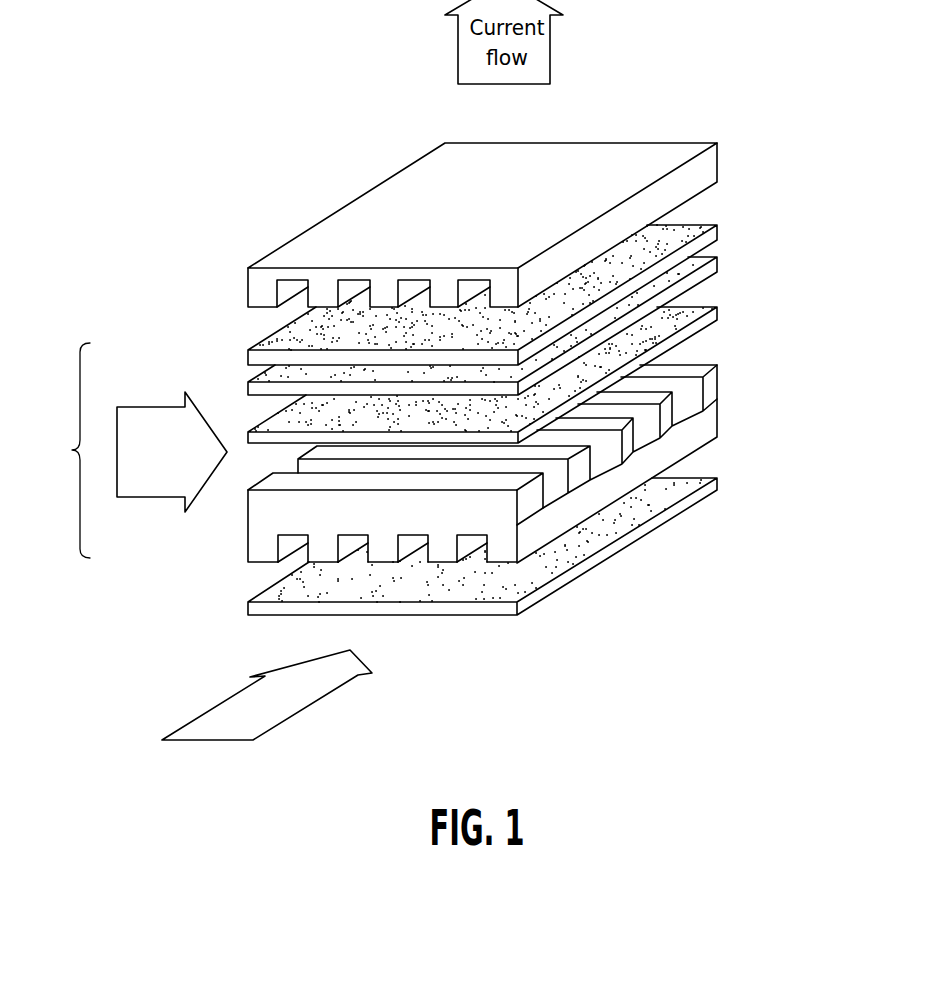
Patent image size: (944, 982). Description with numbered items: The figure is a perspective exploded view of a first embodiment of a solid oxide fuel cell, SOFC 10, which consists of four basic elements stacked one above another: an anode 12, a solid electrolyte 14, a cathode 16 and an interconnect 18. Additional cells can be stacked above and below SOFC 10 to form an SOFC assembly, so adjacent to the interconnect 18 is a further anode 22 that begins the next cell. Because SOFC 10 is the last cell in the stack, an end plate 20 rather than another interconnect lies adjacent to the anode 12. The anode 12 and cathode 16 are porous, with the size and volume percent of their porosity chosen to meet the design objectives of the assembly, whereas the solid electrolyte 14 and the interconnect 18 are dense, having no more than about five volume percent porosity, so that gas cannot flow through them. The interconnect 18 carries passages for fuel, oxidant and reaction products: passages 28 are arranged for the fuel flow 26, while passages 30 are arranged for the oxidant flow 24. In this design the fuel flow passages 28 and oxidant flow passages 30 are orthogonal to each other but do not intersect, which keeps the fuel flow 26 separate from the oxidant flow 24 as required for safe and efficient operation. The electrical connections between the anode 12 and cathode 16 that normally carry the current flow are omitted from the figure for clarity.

The SOFC 10 is at (63, 450).
The anode 12 is at (277, 342).
The solid electrolyte 14 is at (248, 388).
The cathode 16 is at (248, 432).
The interconnect 18 is at (263, 512).
The end plate 20 is at (647, 155).
The anode 22 is at (632, 535).
The oxidant flow 24 is at (137, 483).
The fuel flow 26 is at (250, 732).
The fuel flow passages 28 is at (290, 555).
The oxidant flow passages 30 is at (693, 395).